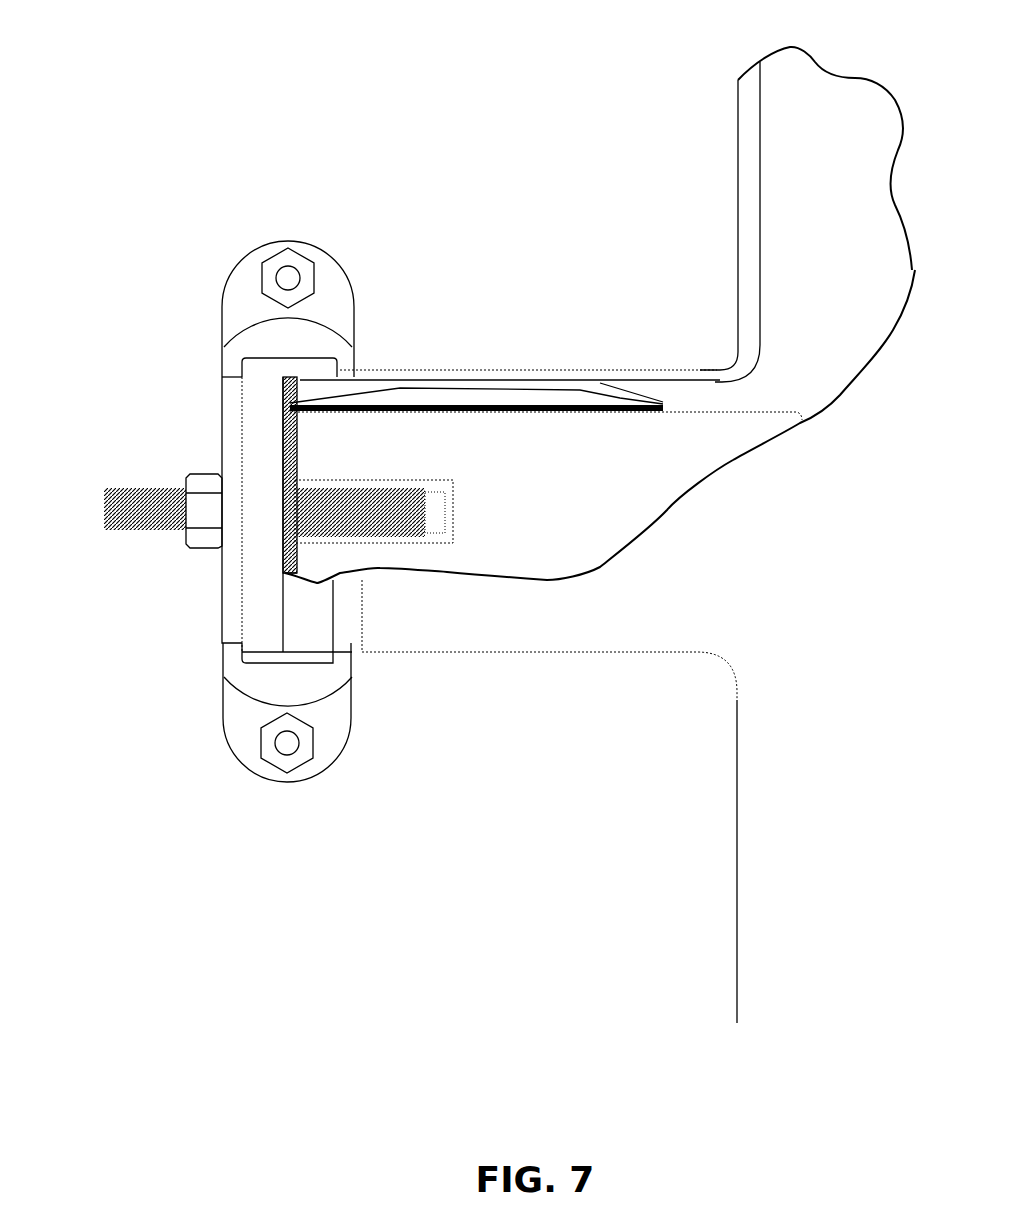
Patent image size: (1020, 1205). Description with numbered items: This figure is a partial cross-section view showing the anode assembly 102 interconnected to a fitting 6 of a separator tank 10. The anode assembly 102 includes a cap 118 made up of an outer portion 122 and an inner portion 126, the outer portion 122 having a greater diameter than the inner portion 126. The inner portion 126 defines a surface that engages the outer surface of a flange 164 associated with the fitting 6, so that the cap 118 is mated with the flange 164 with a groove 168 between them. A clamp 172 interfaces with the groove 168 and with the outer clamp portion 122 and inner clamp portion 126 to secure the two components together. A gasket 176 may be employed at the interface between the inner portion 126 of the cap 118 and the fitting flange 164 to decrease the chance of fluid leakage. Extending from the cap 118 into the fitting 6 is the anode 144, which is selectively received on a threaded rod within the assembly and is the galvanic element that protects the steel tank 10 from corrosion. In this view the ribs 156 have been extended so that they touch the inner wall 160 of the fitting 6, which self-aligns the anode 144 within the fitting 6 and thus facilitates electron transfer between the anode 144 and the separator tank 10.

The fitting 6 is at (462, 623).
The separator tank 10 is at (792, 875).
The anode assembly 102 is at (158, 517).
The cap 118 is at (253, 600).
The outer portion 122 is at (228, 423).
The inner portion 126 is at (243, 627).
The anode 144 is at (557, 521).
The ribs 156 is at (472, 378).
The inner wall 160 is at (657, 379).
The flange 164 is at (300, 632).
The groove 168 is at (343, 617).
The clamp 172 is at (260, 683).
The gasket 176 is at (298, 367).